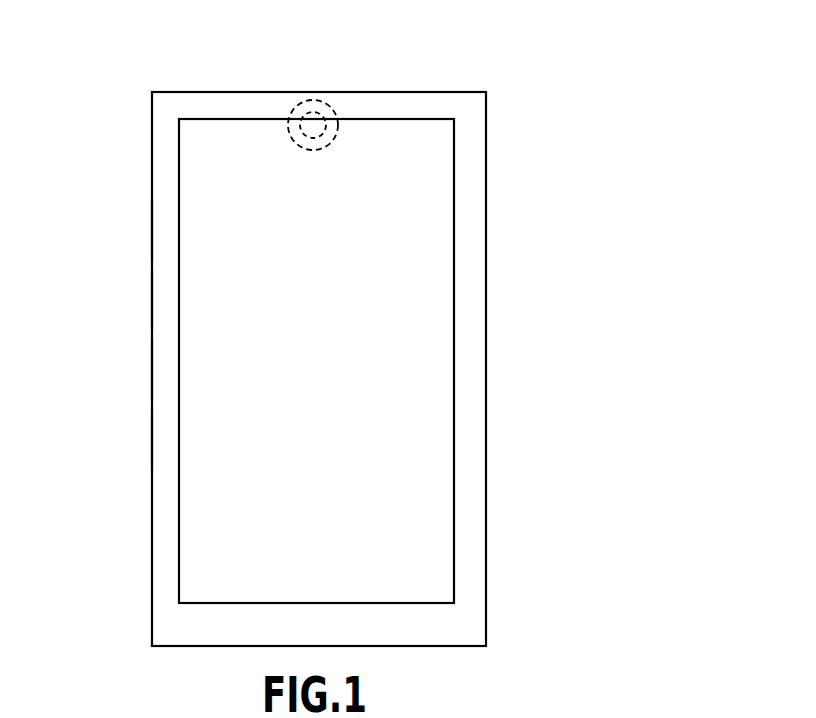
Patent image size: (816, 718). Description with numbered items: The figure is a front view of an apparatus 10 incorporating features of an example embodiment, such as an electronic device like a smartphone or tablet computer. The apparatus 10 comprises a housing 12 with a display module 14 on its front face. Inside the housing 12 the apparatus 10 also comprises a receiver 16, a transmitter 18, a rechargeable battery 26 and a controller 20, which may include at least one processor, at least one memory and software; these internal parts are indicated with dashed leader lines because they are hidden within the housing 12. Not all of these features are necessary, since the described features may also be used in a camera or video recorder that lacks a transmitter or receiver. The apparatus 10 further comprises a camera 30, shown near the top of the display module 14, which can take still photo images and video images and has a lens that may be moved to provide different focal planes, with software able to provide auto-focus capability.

The apparatus 10 is at (532, 57).
The housing 12 is at (152, 172).
The display module 14 is at (437, 287).
The receiver 16 is at (152, 230).
The transmitter 18 is at (152, 298).
The controller 20 is at (152, 372).
The rechargeable battery 26 is at (152, 438).
The camera 30 is at (318, 118).